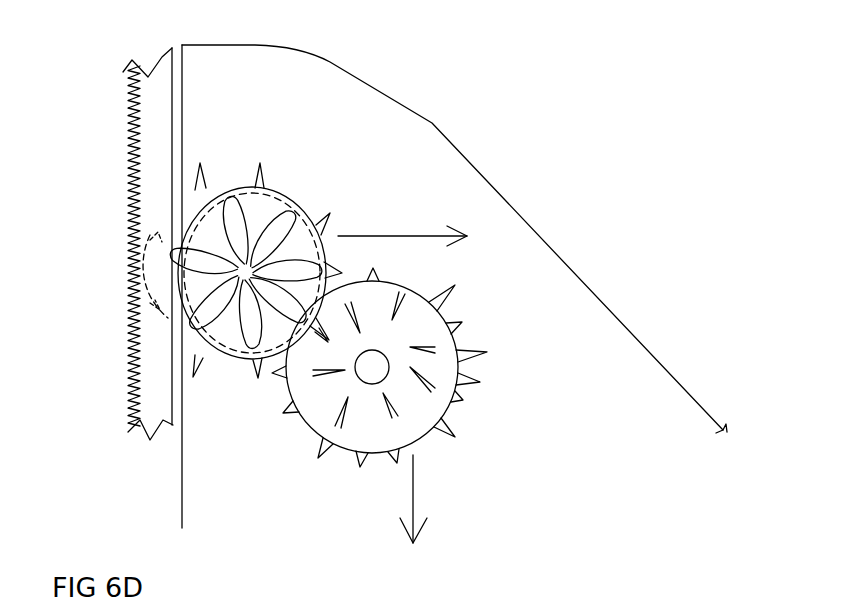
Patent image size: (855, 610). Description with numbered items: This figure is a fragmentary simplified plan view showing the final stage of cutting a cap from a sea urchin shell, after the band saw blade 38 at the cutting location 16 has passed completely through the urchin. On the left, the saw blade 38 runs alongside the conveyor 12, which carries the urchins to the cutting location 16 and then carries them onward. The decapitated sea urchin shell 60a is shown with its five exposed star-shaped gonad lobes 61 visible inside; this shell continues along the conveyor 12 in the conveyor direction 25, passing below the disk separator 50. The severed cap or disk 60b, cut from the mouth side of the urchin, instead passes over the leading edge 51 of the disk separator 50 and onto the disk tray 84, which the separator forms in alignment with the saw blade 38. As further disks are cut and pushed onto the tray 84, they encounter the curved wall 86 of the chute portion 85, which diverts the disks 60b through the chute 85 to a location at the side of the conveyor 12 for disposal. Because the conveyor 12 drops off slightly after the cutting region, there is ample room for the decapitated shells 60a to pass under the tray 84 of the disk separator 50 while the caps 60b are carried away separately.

The cutting location 16 is at (145, 62).
The saw blade 38 is at (130, 135).
The conveyor 12 is at (88, 338).
The leading edge 51 is at (183, 490).
The disk separator 50 is at (450, 125).
The disk tray 84 is at (372, 163).
The chute portion 85 is at (661, 549).
The curved wall 86 is at (608, 310).
The conveyor direction 25 is at (409, 235).
The decapitated sea urchin shell 60a is at (228, 186).
The gonad lobes 61 is at (213, 323).
The cap or disk 60b is at (458, 358).